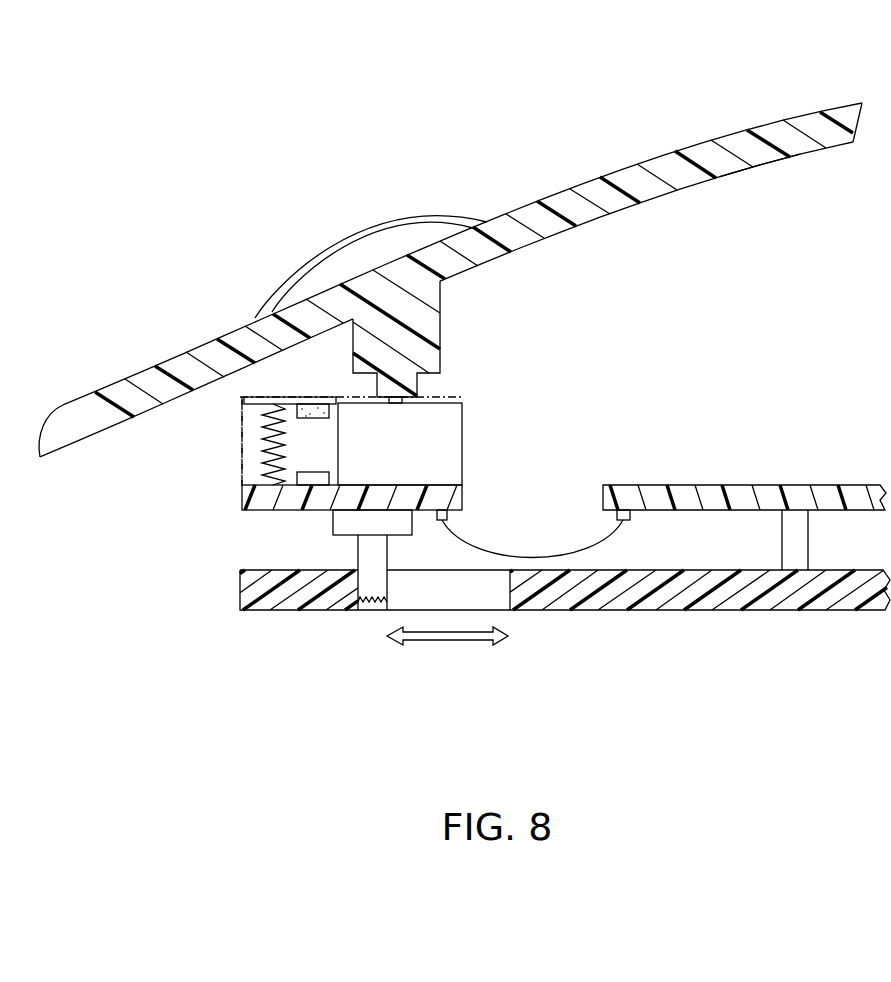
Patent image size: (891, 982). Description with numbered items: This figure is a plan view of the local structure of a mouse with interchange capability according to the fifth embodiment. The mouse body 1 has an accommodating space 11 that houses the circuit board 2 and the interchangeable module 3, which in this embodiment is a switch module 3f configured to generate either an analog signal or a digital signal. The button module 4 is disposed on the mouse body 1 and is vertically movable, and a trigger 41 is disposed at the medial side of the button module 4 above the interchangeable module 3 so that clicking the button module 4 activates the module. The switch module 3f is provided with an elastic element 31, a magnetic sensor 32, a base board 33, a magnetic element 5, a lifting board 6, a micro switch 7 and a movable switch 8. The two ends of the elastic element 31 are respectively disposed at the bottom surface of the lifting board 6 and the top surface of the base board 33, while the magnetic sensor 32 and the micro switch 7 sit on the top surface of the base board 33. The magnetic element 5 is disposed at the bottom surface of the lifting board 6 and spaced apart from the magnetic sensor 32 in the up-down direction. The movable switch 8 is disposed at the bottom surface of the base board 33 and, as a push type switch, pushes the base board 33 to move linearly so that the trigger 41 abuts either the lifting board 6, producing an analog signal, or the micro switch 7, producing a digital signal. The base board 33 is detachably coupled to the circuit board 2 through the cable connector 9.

The mouse body 1 is at (270, 624).
The circuit board 2 is at (742, 476).
The interchangeable module 3 is at (124, 458).
The switch module 3f is at (213, 470).
The button module 4 is at (556, 174).
The magnetic element 5 is at (313, 410).
The lifting board 6 is at (277, 397).
The micro switch 7 is at (447, 403).
The movable switch 8 is at (388, 549).
The cable connector 9 is at (530, 558).
The accommodating space 11 is at (750, 217).
The elastic element 31 is at (270, 432).
The magnetic sensor 32 is at (318, 479).
The base board 33 is at (463, 500).
The trigger 41 is at (443, 340).